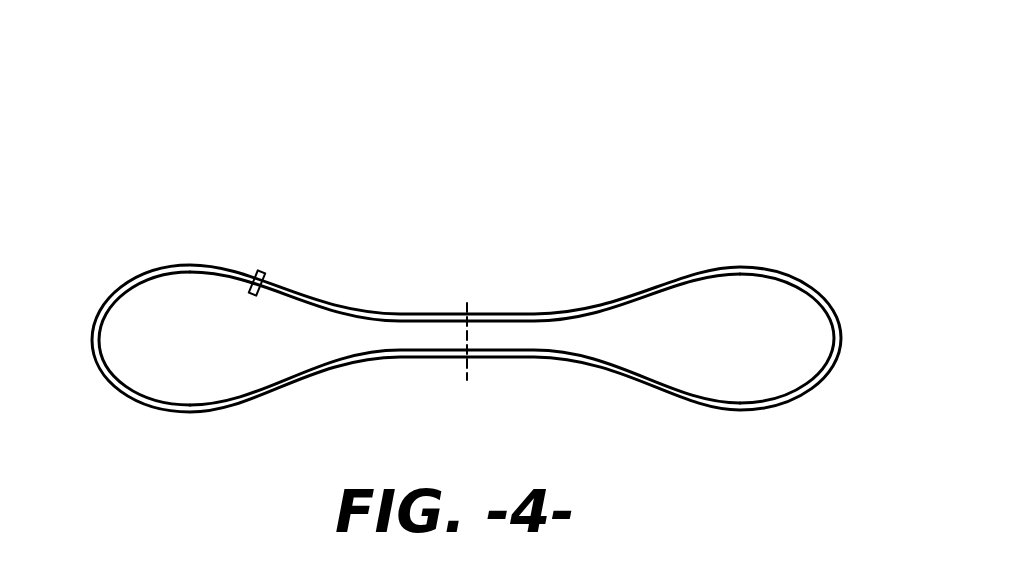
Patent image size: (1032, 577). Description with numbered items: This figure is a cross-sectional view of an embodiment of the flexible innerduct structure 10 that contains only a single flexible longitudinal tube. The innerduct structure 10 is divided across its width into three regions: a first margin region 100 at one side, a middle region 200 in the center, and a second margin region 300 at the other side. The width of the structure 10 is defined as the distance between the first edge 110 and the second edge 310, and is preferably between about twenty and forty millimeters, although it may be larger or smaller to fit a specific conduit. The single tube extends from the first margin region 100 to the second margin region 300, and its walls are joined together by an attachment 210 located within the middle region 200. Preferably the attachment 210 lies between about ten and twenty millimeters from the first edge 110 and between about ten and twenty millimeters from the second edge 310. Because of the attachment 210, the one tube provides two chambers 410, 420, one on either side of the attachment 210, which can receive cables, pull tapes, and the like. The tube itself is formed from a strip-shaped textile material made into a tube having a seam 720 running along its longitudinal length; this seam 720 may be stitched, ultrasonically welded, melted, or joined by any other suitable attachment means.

The innerduct structure 10 is at (311, 108).
The first margin region 100 is at (372, 204).
The first edge 110 is at (50, 245).
The middle region 200 is at (372, 204).
The attachment 210 is at (468, 370).
The second margin region 300 is at (850, 204).
The second edge 310 is at (891, 245).
The chamber 410 is at (159, 353).
The chamber 420 is at (711, 353).
The seam 720 is at (266, 274).